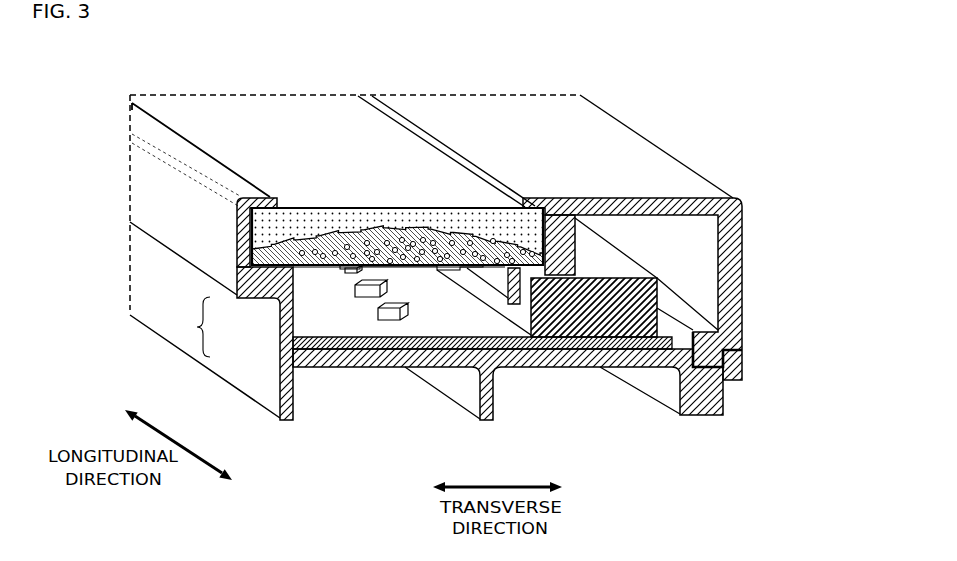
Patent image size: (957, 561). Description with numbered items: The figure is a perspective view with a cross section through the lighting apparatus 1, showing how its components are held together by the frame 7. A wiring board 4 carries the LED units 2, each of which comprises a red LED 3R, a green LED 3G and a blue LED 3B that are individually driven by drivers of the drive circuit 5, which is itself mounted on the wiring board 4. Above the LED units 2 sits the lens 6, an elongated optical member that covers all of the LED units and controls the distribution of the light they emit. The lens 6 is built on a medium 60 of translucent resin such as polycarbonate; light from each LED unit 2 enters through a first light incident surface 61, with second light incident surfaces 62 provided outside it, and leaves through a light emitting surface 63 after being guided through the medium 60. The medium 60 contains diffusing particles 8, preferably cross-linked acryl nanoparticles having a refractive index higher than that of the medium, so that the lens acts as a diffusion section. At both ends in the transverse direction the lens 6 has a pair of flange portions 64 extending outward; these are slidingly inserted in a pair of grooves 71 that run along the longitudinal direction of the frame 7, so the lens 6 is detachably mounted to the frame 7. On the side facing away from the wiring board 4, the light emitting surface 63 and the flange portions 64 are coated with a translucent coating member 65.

The lighting apparatus 1 is at (411, 65).
The LED unit 2 is at (197, 328).
The blue LED 3B is at (350, 269).
The green LED 3G is at (357, 291).
The red LED 3R is at (380, 313).
The wiring board 4 is at (557, 368).
The drive circuit 5 is at (608, 265).
The lens 6 is at (270, 106).
The frame 7 is at (656, 164).
The diffusing particles 8 is at (426, 234).
The medium 60 is at (397, 237).
The first light incident surface 61 is at (408, 273).
The second light incident surface 62 is at (420, 279).
The light emitting surface 63 is at (388, 232).
The flange portion 64 is at (268, 197).
The translucent coating member 65 is at (467, 222).
The groove 71 is at (237, 222).